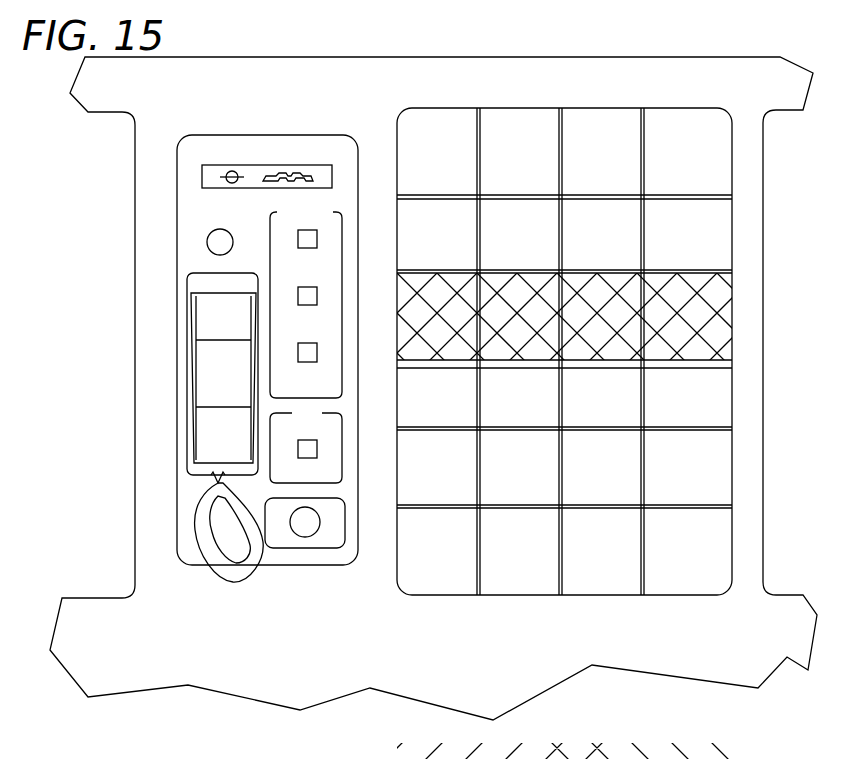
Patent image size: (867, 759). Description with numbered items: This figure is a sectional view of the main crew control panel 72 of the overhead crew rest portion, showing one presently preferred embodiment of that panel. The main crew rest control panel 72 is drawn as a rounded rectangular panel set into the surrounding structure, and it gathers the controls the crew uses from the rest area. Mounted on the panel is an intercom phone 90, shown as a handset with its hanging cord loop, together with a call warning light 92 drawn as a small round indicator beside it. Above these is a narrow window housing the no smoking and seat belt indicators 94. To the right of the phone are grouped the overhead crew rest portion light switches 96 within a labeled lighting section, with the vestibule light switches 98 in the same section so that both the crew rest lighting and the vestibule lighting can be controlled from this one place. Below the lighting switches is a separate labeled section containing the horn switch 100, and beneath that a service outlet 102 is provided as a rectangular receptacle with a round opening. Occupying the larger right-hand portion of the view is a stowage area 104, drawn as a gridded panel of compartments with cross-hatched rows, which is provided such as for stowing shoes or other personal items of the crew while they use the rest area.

The main crew rest control panel 72 is at (279, 131).
The intercom phone 90 is at (185, 300).
The call warning light 92 is at (211, 231).
The no smoking and seat belt indicators 94 is at (232, 167).
The overhead crew rest portion light switches 96 is at (317, 297).
The vestibule light switches 98 is at (317, 353).
The horn switch 100 is at (318, 449).
The service outlet 102 is at (287, 549).
The stowage area 104 is at (737, 603).